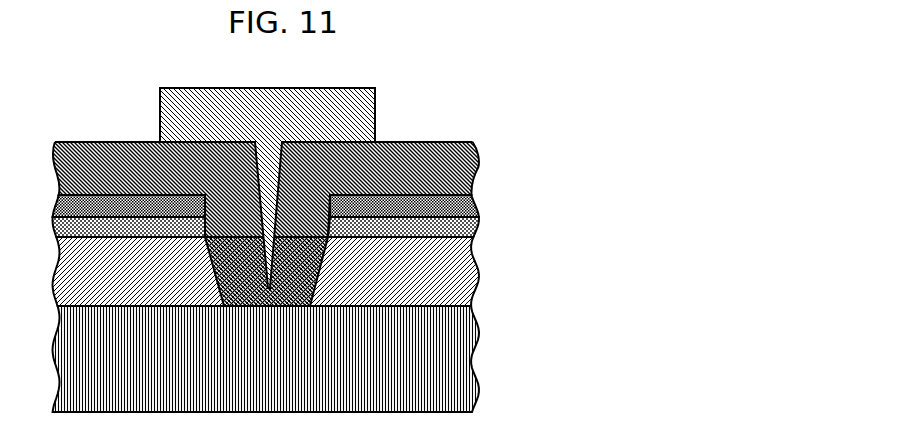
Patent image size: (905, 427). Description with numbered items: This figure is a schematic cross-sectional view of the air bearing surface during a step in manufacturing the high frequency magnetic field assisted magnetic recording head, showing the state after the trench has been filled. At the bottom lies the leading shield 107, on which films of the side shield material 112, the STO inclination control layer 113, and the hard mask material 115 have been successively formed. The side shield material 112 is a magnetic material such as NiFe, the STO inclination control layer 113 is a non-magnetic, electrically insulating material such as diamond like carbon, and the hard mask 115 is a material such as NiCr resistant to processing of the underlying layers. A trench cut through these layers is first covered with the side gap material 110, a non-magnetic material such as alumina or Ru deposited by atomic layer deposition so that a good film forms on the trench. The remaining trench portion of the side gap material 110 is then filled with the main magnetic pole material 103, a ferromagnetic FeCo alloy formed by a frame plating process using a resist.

The main magnetic pole material 103 is at (377, 113).
The side gap material 110 is at (463, 170).
The hard mask material 115 is at (458, 203).
The STO inclination control layer 113 is at (458, 230).
The side shield material 112 is at (457, 273).
The leading shield 107 is at (458, 357).